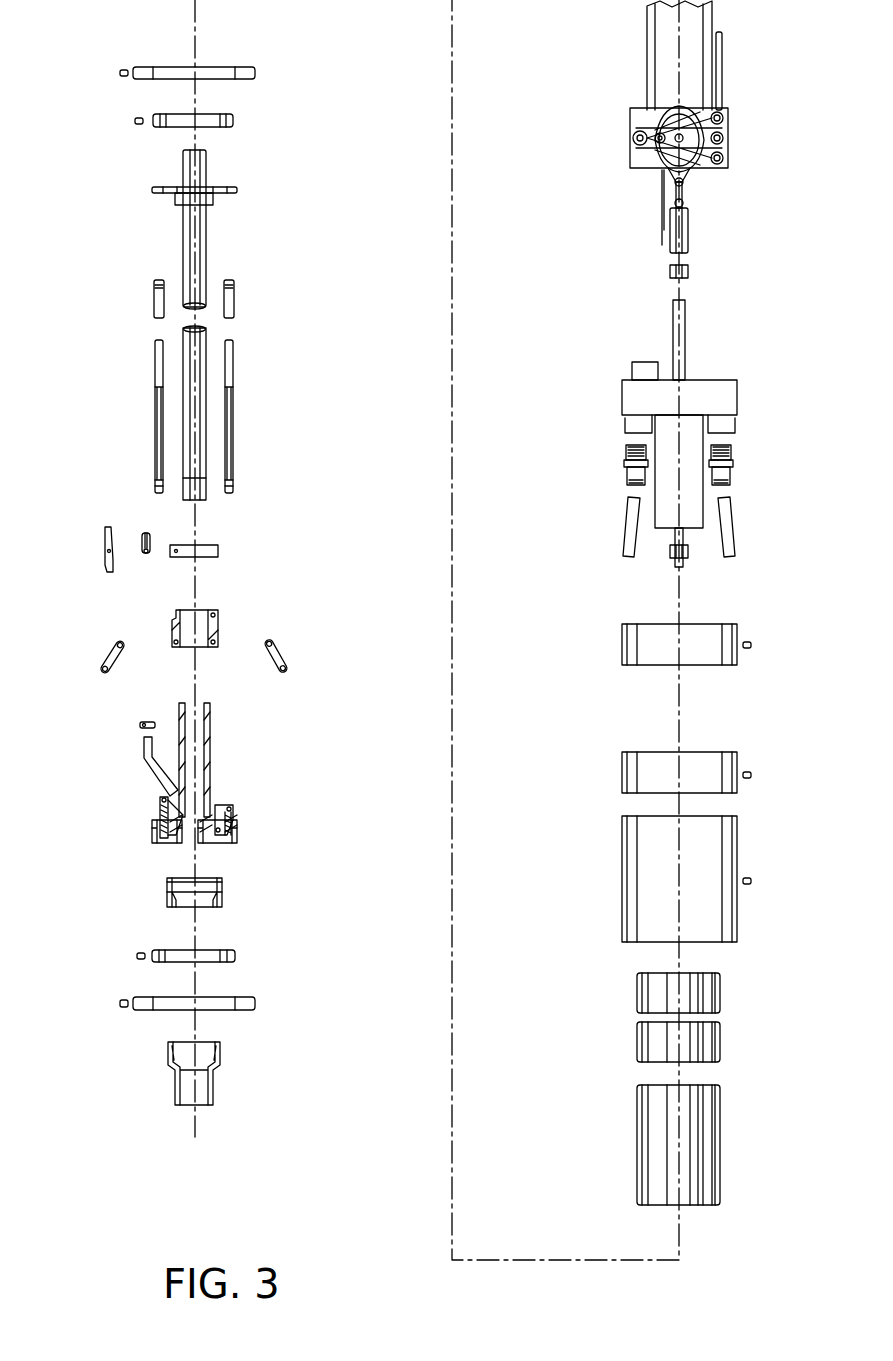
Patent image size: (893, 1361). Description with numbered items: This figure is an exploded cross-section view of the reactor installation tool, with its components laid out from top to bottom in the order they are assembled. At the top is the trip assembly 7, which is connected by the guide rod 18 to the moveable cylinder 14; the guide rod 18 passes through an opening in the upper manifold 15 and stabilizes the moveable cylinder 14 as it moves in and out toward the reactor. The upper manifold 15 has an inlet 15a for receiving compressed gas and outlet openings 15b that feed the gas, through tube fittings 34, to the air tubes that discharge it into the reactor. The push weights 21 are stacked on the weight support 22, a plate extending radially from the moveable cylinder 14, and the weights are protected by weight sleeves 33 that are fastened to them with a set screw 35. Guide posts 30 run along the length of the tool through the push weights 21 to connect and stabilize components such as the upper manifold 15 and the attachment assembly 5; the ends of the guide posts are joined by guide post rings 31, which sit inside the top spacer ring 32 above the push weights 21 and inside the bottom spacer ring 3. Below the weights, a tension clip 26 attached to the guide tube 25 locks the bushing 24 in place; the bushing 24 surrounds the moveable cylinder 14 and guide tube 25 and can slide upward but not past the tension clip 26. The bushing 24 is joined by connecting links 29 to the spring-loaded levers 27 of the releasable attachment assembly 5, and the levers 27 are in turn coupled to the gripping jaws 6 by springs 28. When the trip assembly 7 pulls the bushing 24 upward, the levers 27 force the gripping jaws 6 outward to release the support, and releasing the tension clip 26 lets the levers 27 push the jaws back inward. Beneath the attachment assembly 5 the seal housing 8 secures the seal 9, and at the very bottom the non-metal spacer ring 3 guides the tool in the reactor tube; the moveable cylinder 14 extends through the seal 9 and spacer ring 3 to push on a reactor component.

The spacer ring 3 is at (256, 1004).
The releasable attachment assembly 5 is at (252, 788).
The gripping jaws 6 is at (175, 834).
The trip assembly 7 is at (735, 105).
The seal housing 8 is at (222, 893).
The seal 9 is at (215, 1045).
The moveable cylinder 14 is at (203, 458).
The upper manifold 15 is at (730, 398).
The inlet 15a is at (632, 375).
The outlet openings 15b is at (627, 422).
The guide rod 18 is at (686, 327).
The push weights 21 is at (712, 993).
The weight support 22 is at (238, 190).
The bushing 24 is at (214, 625).
The guide tube 25 is at (213, 722).
The tension clip 26 is at (100, 520).
The spring-loaded levers 27 is at (222, 805).
The springs 28 is at (160, 808).
The connecting link 29 is at (278, 655).
The guide posts 30 is at (232, 300).
The guide post rings 31 is at (235, 120).
The top spacer ring 32 is at (257, 73).
The weight sleeves 33 is at (730, 634).
The tube fittings 34 is at (732, 472).
The set screw 35 is at (752, 645).